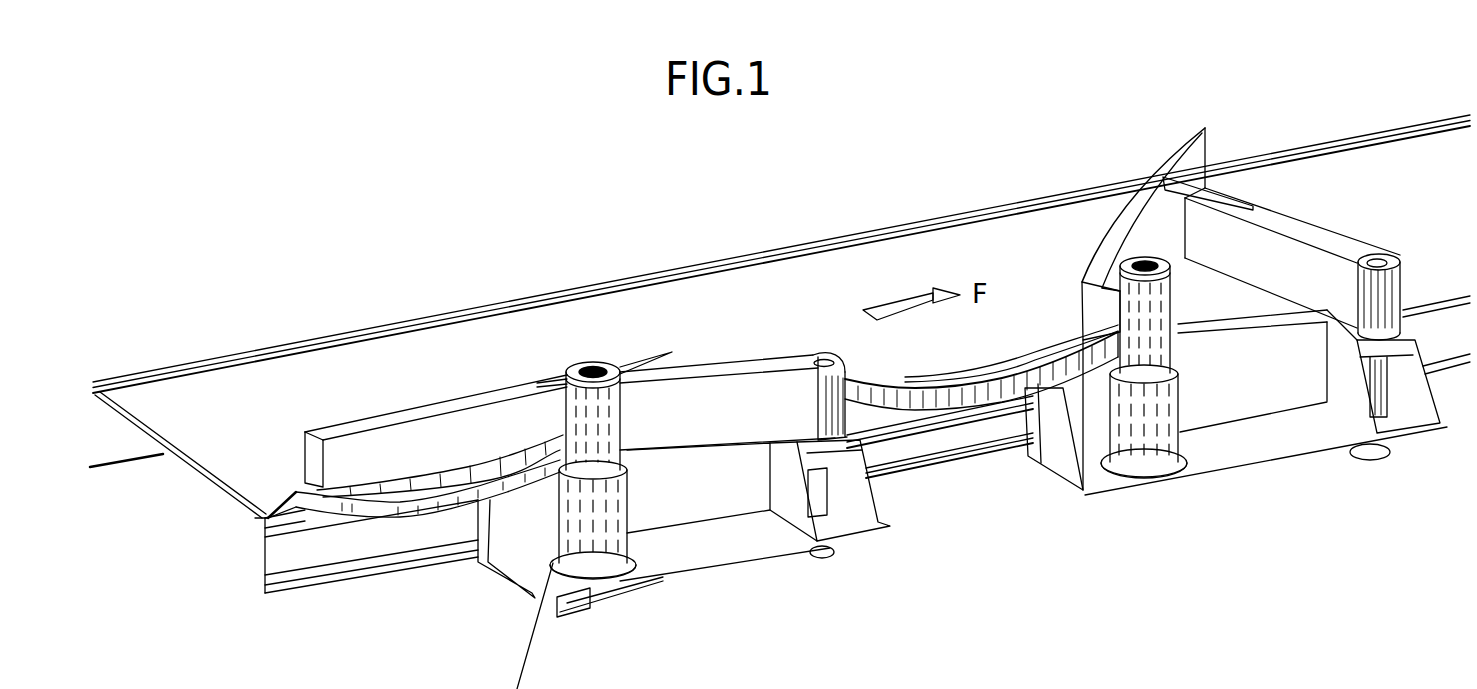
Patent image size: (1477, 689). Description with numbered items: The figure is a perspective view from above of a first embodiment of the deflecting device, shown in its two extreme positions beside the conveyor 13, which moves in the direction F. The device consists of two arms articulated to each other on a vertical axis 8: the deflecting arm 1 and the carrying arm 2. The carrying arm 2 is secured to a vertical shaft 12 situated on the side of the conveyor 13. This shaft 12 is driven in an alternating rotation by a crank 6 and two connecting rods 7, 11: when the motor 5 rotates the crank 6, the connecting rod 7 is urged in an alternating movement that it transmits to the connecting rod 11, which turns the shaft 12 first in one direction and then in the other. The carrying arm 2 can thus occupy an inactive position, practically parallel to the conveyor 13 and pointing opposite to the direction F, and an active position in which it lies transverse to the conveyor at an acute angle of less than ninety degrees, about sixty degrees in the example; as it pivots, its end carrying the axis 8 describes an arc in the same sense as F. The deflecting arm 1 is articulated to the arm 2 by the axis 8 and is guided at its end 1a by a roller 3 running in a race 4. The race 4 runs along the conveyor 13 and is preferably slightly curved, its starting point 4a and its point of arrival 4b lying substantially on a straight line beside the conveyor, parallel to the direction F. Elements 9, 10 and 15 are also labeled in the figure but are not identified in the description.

The deflecting arm 1 is at (438, 408).
The end of deflecting arm 1a is at (302, 466).
The carrying arm 2 is at (749, 370).
The roller 3 is at (316, 490).
The race 4 is at (413, 510).
The starting point of race 4a is at (264, 518).
The point of arrival of race 4b is at (538, 490).
The motor 5 is at (1157, 310).
The crank 6 is at (506, 500).
The connecting rod 7 is at (627, 583).
The vertical axis 8 is at (537, 384).
The slanted support plate 9 is at (863, 500).
The base plate 10 is at (322, 553).
The connecting rod 11 is at (796, 560).
The vertical shaft 12 is at (833, 500).
The conveyor 13 is at (243, 392).
The track rails 15 is at (890, 465).